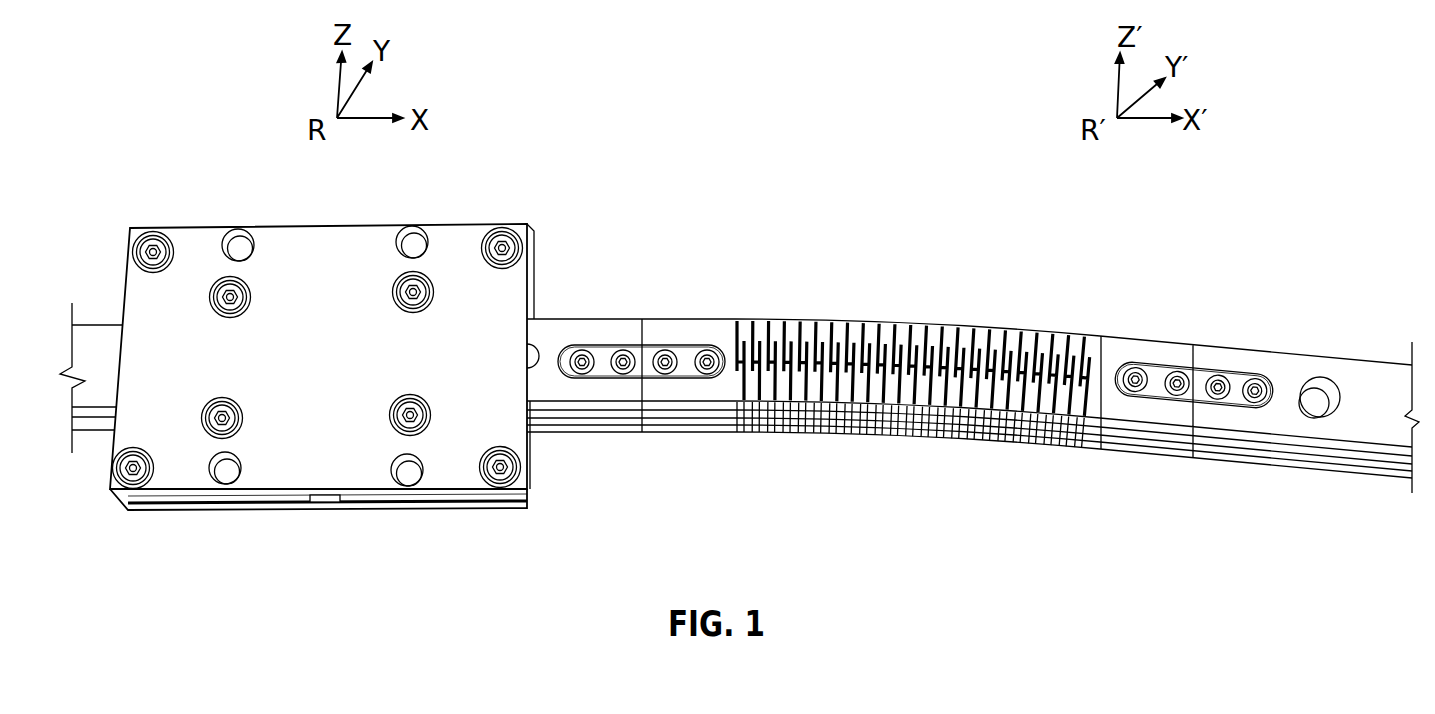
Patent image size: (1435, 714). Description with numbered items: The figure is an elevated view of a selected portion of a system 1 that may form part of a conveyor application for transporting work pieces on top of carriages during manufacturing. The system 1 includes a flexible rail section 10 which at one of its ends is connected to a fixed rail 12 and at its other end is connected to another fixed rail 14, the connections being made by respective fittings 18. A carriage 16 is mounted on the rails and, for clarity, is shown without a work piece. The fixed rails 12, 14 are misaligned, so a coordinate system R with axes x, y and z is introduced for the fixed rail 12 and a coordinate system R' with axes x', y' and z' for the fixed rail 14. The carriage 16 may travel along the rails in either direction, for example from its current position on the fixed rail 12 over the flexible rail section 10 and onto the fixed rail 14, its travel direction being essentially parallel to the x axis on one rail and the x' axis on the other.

The system 1 is at (241, 148).
The flexible rail section 10 is at (680, 432).
The fixed rail 12 is at (561, 333).
The fixed rail 14 is at (1237, 348).
The carriage 16 is at (403, 508).
The fittings 18 is at (683, 355).